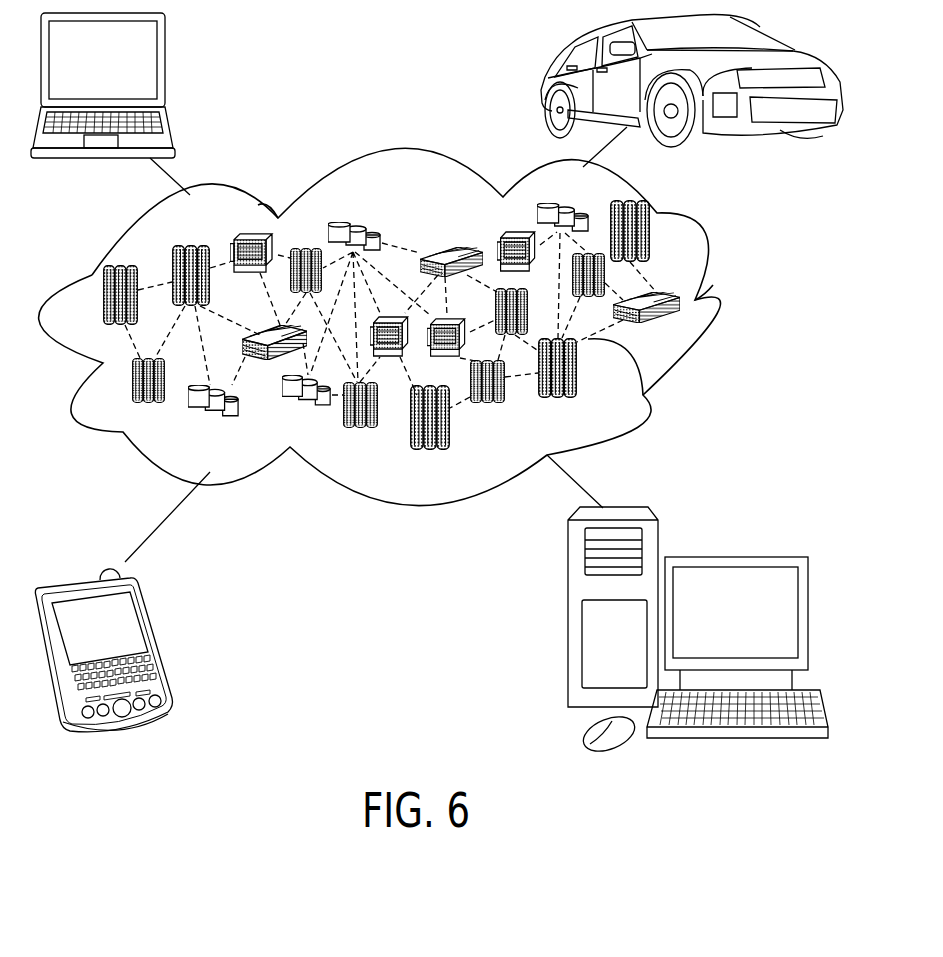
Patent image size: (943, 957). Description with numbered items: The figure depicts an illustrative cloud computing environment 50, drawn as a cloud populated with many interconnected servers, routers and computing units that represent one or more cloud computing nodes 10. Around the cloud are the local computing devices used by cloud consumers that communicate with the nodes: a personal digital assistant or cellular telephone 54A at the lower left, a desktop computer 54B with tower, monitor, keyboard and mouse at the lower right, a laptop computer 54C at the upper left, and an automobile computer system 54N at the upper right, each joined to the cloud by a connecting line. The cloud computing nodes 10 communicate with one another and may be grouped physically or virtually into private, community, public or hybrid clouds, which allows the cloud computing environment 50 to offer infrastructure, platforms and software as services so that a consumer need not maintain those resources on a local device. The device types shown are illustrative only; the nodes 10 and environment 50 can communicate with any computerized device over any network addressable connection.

The cloud computing nodes 10 is at (697, 333).
The cloud computing environment 50 is at (735, 306).
The personal digital assistant or cellular telephone 54A is at (154, 640).
The desktop computer 54B is at (733, 557).
The laptop computer 54C is at (162, 63).
The automobile computer system 54N is at (543, 78).